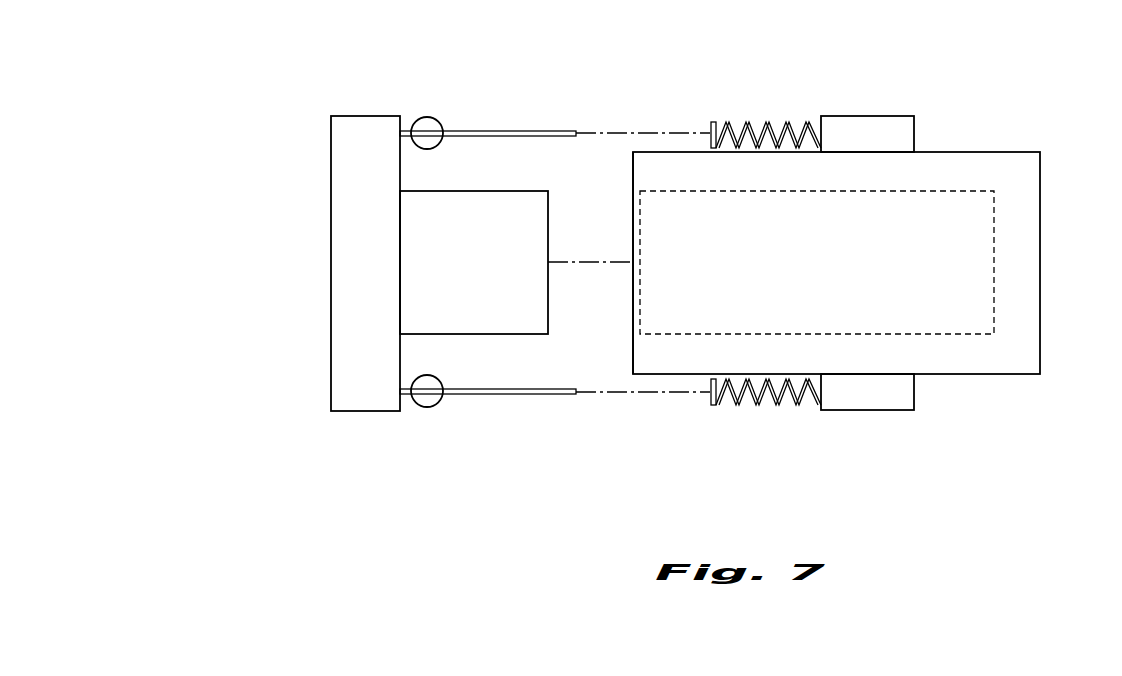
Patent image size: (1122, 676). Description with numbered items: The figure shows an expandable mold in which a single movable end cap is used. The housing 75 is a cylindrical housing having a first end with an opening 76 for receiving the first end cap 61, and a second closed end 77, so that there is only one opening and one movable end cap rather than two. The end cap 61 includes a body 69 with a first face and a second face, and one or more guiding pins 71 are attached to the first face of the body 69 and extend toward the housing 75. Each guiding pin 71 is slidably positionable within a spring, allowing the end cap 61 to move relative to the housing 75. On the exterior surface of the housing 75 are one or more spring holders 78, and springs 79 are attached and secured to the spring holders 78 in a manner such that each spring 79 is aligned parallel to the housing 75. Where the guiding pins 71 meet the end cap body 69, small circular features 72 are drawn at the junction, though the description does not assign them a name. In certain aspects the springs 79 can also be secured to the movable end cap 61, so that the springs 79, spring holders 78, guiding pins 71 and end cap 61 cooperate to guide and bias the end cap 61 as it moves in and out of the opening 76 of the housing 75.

The end cap 61 is at (300, 160).
The body 69 is at (368, 378).
The guiding pin 71 is at (505, 131).
The roller 72 is at (426, 117).
The housing 75 is at (950, 304).
The opening 76 is at (633, 229).
The second closed end 77 is at (1040, 262).
The spring holder 78 is at (870, 116).
The spring 79 is at (760, 119).